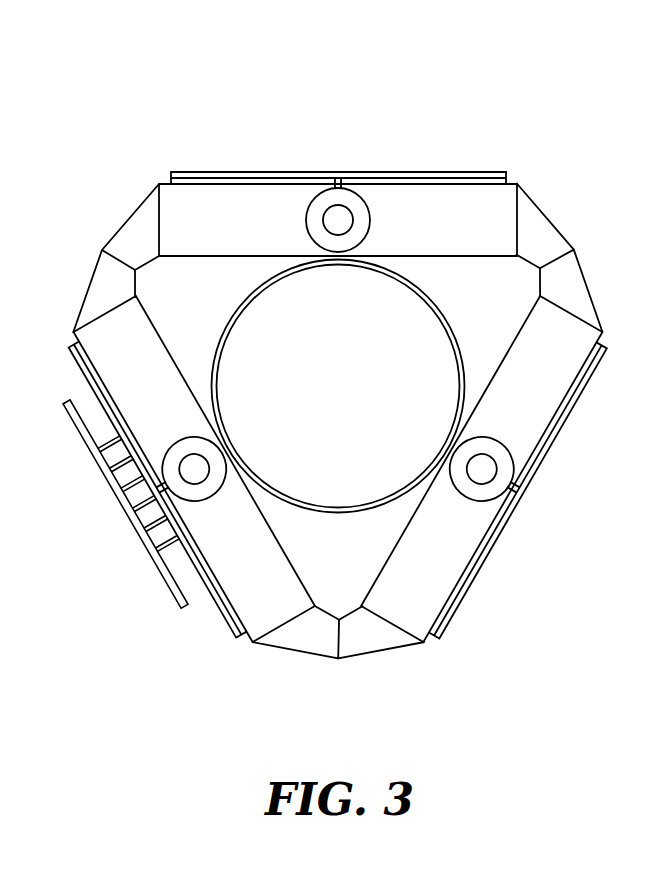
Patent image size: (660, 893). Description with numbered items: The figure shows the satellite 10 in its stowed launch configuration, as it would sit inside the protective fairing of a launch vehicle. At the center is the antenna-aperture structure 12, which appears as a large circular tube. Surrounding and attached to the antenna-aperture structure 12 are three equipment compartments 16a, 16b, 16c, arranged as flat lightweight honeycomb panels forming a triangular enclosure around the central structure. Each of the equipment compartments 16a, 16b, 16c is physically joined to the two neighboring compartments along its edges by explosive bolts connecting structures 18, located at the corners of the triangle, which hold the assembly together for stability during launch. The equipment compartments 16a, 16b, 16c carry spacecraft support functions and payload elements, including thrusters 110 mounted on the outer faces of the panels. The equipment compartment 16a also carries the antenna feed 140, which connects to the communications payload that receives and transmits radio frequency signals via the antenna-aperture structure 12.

The satellite 10 is at (248, 97).
The antenna-aperture structure 12 is at (360, 517).
The equipment compartment 16a is at (253, 600).
The equipment compartment 16b is at (445, 203).
The equipment compartment 16c is at (537, 415).
The explosive bolts connecting structures 18 is at (95, 287).
The thrusters 110 is at (352, 213).
The antenna feed 140 is at (125, 513).